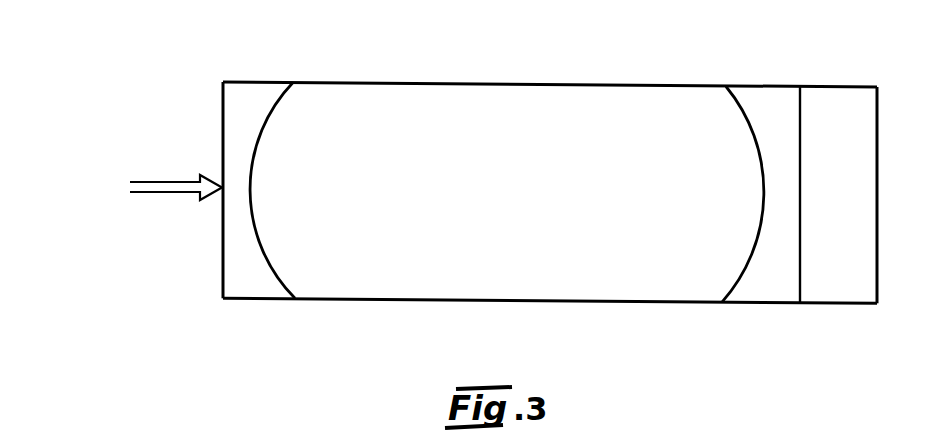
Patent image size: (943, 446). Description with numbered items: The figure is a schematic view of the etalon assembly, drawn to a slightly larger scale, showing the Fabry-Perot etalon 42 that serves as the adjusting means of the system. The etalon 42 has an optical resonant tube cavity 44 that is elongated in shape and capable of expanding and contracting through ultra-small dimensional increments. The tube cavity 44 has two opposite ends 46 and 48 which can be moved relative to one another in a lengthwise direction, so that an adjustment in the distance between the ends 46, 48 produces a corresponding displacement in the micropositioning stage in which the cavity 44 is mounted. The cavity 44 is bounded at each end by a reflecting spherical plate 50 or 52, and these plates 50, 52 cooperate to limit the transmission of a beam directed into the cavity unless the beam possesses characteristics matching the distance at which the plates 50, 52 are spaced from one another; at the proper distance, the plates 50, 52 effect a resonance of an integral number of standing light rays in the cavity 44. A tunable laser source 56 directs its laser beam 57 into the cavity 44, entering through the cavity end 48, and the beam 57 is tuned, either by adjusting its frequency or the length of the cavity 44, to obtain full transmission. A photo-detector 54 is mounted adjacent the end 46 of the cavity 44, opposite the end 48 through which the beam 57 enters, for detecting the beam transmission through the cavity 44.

The etalon 42 is at (440, 301).
The optical resonant tube cavity 44 is at (490, 85).
The end of the cavity 46 is at (767, 303).
The end of the cavity 48 is at (240, 299).
The reflecting spherical plate 50 is at (283, 89).
The reflecting spherical plate 52 is at (737, 97).
The photo-detector 54 is at (833, 84).
The tunable laser source 56 is at (125, 199).
The laser beam 57 is at (165, 175).